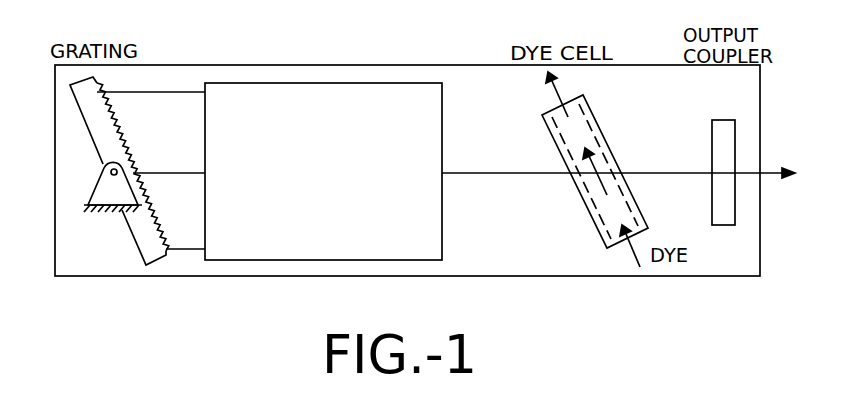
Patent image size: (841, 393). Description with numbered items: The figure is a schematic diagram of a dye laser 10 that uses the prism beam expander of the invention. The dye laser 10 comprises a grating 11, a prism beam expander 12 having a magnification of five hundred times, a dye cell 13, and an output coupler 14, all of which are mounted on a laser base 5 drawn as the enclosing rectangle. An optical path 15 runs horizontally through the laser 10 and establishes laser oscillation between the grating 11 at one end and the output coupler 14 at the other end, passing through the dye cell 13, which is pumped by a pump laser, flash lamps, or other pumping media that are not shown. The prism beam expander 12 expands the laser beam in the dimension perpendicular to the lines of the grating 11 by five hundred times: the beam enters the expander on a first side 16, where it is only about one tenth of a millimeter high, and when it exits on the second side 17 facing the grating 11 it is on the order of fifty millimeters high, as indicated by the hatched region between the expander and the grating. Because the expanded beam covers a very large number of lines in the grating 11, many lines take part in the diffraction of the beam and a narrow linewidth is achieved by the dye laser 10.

The laser base 5 is at (662, 277).
The dye laser 10 is at (365, 45).
The grating 11 is at (130, 233).
The prism beam expander 12 is at (367, 260).
The dye cell 13 is at (595, 117).
The output coupler 14 is at (712, 147).
The optical path 15 is at (485, 173).
The first side 16 is at (442, 110).
The second side 17 is at (205, 127).